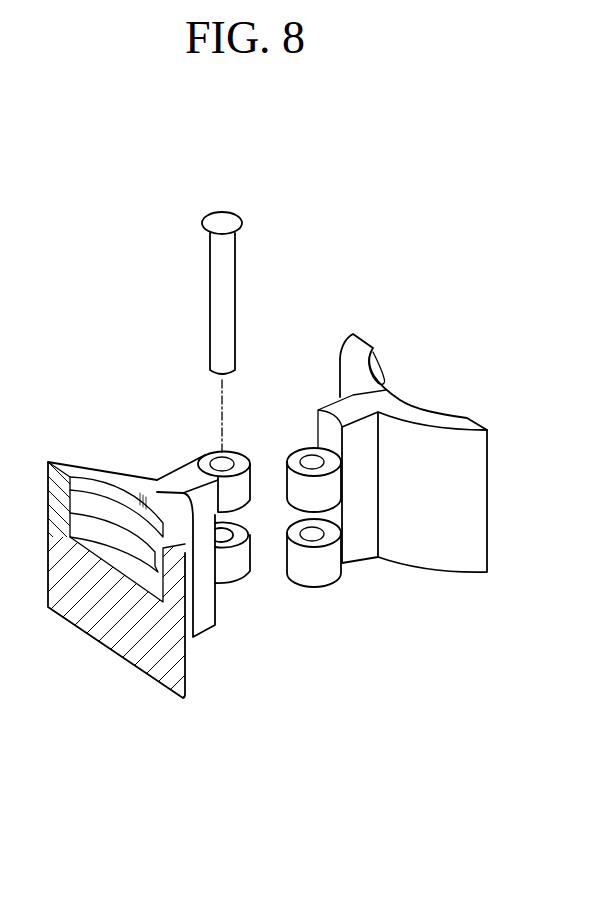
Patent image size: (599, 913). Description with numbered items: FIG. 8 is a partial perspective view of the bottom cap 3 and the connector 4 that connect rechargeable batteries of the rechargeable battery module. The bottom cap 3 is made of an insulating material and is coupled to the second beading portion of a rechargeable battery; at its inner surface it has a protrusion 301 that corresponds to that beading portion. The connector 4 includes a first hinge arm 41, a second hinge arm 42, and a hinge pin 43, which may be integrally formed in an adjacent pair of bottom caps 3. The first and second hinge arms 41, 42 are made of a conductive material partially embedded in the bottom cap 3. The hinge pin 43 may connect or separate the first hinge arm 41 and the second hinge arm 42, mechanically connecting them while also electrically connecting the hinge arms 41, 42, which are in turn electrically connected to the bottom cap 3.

The bottom cap 3 is at (299, 440).
The protrusion 301 is at (103, 505).
The connector 4 is at (146, 262).
The first hinge arm 41 is at (188, 471).
The second hinge arm 42 is at (345, 410).
The hinge pin 43 is at (222, 298).